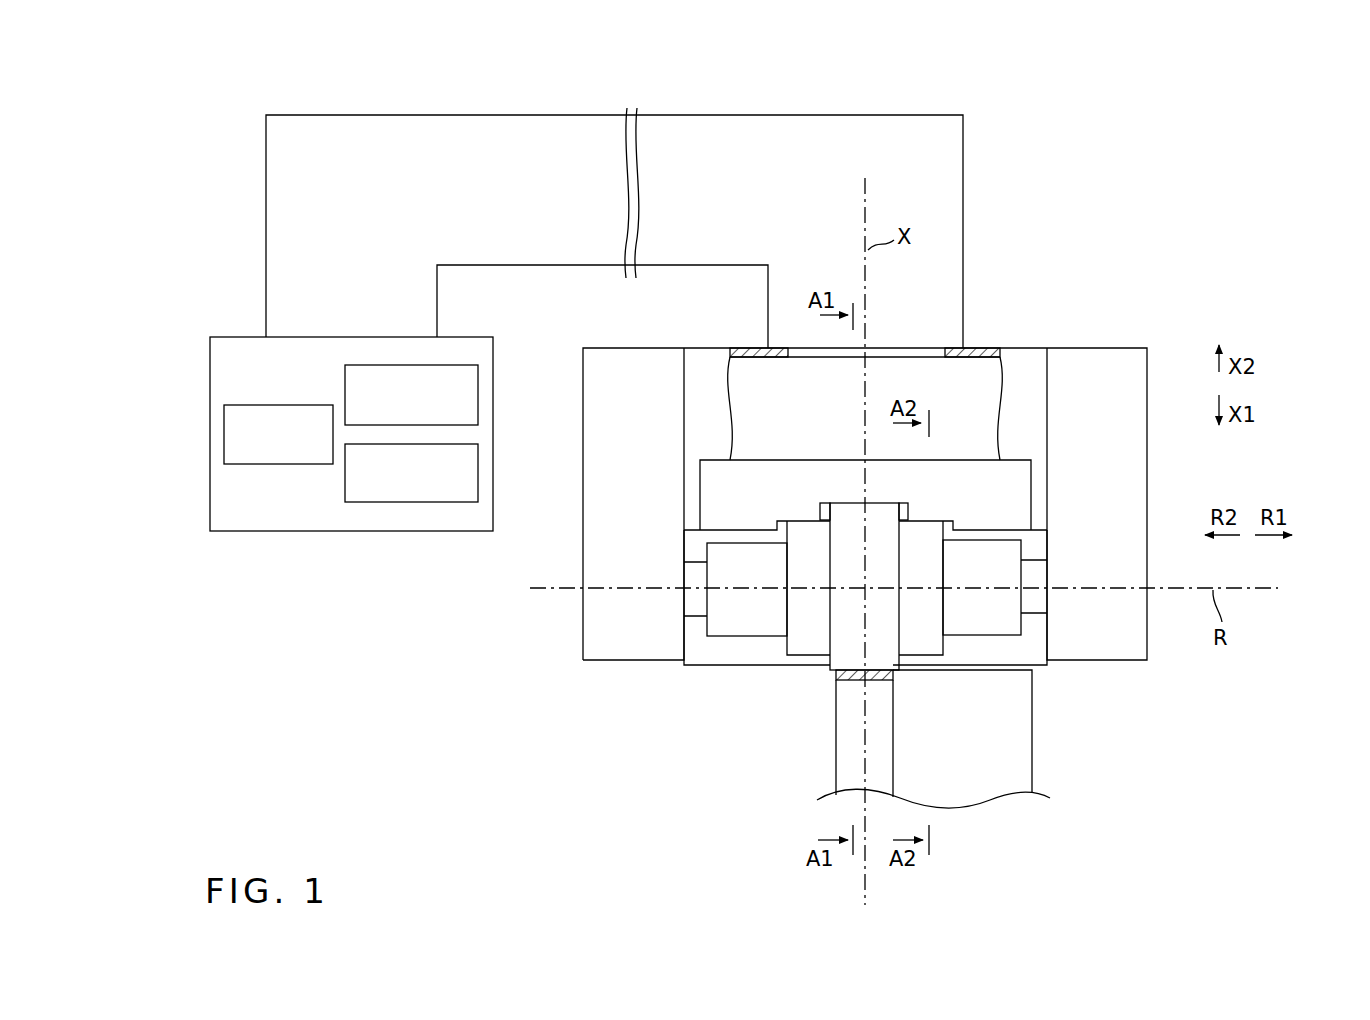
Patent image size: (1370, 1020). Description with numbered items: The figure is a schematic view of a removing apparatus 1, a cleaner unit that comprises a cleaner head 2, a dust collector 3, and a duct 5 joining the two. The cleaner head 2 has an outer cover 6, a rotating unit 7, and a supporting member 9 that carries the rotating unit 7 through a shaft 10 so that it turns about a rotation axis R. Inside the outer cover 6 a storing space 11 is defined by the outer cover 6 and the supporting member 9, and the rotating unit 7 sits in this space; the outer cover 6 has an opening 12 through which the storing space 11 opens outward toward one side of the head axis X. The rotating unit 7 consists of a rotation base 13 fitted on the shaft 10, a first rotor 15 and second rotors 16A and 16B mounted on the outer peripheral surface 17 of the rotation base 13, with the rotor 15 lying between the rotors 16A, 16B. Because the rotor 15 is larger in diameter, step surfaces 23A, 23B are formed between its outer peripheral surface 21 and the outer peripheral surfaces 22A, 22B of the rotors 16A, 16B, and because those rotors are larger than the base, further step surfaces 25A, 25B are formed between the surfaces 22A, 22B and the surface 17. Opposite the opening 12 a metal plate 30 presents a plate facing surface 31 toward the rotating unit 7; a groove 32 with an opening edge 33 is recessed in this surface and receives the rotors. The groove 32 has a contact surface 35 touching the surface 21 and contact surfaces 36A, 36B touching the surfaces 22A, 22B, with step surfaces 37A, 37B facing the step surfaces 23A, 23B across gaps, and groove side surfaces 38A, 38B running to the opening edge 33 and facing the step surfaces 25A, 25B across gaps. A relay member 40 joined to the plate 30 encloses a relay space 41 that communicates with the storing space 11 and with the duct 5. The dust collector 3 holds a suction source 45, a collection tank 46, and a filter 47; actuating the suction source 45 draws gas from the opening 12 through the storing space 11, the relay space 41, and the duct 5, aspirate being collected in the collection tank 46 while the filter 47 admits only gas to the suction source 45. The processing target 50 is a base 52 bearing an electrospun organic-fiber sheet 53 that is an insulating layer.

The removing apparatus 1 is at (1210, 63).
The cleaner head 2 is at (867, 491).
The dust collector 3 is at (376, 408).
The duct 5 is at (808, 113).
The outer cover 6 is at (690, 665).
The rotating unit 7 is at (729, 650).
The supporting member 9 is at (614, 655).
The shaft 10 is at (690, 571).
The storing space 11 is at (1038, 548).
The opening 12 is at (1036, 668).
The rotation base 13 is at (733, 550).
The rotor 15 is at (872, 515).
The rotor 16A is at (940, 530).
The rotor 16B is at (807, 642).
The outer peripheral surface 17 is at (1010, 532).
The outer peripheral surface 21 is at (856, 684).
The outer peripheral surface 22A is at (930, 648).
The outer peripheral surface 22B is at (816, 664).
The step surface 23A is at (908, 670).
The step surface 23B is at (823, 670).
The step surface 25A is at (940, 645).
The step surface 25B is at (778, 645).
The plate 30 is at (1005, 465).
The plate facing surface 31 is at (982, 540).
The groove 32 is at (856, 508).
The opening edge 33 is at (782, 540).
The contact surface 35 is at (865, 495).
The contact surface 36A is at (921, 530).
The contact surface 36B is at (806, 530).
The step surface 37A is at (890, 510).
The step surface 37B is at (836, 515).
The groove side surface 38A is at (932, 520).
The groove side surface 38B is at (822, 520).
The relay member 40 is at (893, 371).
The relay space 41 is at (962, 375).
The suction source 45 is at (295, 405).
The collection tank 46 is at (478, 392).
The filter 47 is at (478, 472).
The processing target 50 is at (957, 760).
The base 52 is at (881, 782).
The sheet 53 is at (990, 795).